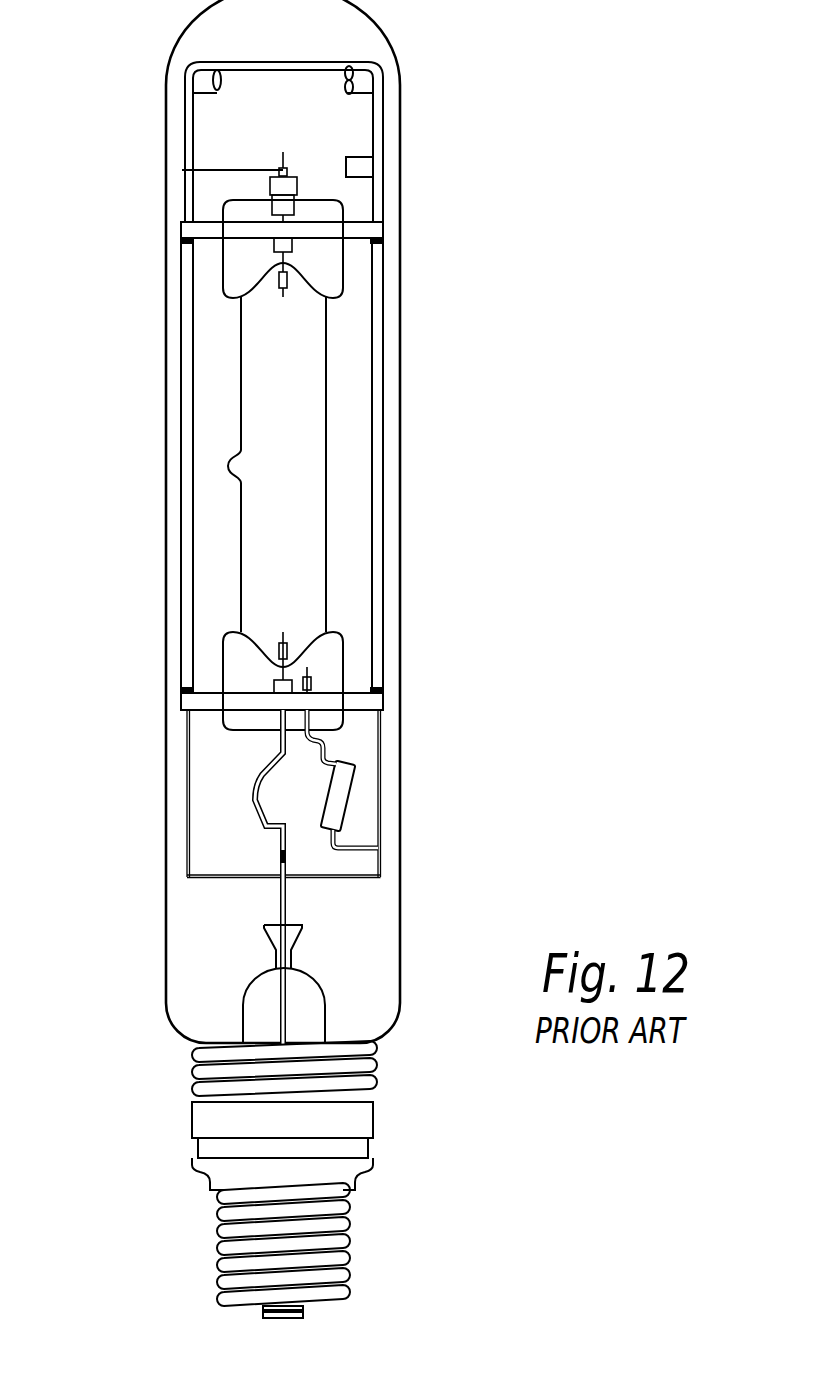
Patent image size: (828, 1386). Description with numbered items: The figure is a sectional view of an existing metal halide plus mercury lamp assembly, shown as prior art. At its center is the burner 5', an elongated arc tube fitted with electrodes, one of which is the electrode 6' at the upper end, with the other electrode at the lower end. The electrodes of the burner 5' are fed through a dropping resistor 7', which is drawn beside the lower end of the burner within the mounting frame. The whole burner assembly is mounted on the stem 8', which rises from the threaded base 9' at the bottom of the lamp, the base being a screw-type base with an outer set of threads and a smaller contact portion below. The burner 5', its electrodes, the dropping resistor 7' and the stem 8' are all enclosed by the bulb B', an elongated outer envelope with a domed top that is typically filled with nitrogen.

The bulb B' is at (239, 521).
The burner 5' is at (233, 465).
The electrode 6' is at (359, 248).
The dropping resistor 7' is at (389, 779).
The stem 8' is at (209, 984).
The threaded base 9' is at (214, 1179).